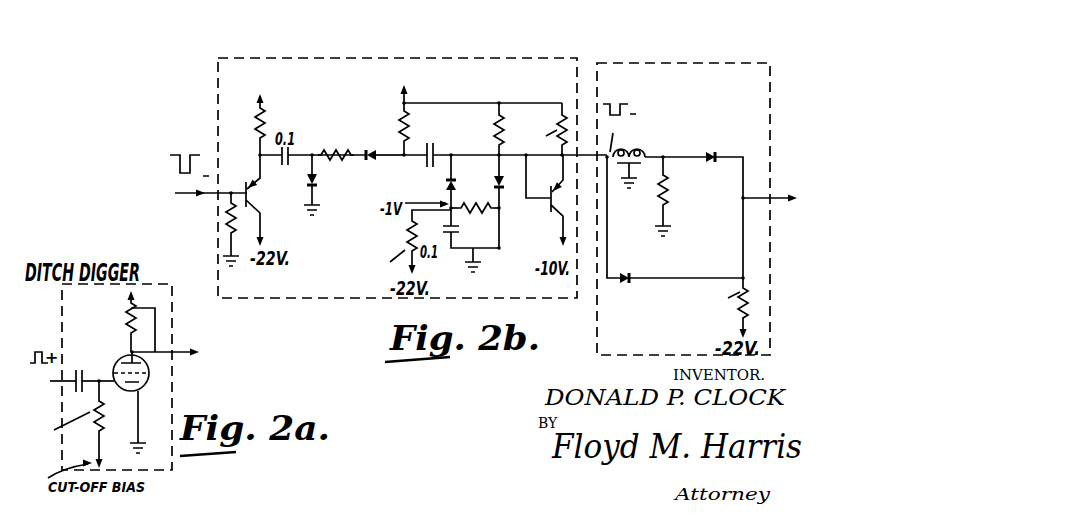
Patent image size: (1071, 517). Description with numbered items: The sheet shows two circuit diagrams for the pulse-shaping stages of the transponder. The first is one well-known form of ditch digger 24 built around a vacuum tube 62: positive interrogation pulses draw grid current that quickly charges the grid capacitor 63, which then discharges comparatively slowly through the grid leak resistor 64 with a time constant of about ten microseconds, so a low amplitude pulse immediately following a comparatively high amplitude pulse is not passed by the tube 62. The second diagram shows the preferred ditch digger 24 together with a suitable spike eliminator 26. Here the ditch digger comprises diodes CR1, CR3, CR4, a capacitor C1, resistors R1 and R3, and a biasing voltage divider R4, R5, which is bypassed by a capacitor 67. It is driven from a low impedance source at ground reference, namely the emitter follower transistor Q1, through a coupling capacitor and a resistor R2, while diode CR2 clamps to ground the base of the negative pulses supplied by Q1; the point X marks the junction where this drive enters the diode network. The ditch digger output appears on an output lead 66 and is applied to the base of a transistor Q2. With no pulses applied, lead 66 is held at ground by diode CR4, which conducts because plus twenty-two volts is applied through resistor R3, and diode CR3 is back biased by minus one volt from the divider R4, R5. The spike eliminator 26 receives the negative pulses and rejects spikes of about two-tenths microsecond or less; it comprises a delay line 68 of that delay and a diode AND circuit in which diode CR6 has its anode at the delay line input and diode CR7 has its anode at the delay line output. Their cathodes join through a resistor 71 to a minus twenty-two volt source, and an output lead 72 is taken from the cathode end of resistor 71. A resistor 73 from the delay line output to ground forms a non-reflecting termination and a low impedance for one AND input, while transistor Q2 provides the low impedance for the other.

In FIG. 2B, the ditch digger 24 is at (411, 50).
In FIG. 2B, the spike eliminator 26 is at (752, 60).
In FIG. 2A, the vacuum tube 62 is at (124, 340).
In FIG. 2A, the grid capacitor 63 is at (72, 392).
In FIG. 2A, the grid leak resistor 64 is at (92, 430).
In FIG. 2B, the output lead 66 is at (523, 160).
In FIG. 2B, the capacitor 67 is at (446, 214).
In FIG. 2B, the delay line 68 is at (614, 168).
In FIG. 2B, the resistor 71 is at (735, 310).
In FIG. 2B, the output lead 72 is at (776, 196).
In FIG. 2B, the resistor 73 is at (675, 200).
In FIG. 2B, the emitter follower transistor Q1 is at (253, 198).
In FIG. 2B, the transistor Q2 is at (558, 185).
In FIG. 2B, the diode CR1 is at (382, 145).
In FIG. 2B, the diode CR2 is at (309, 181).
In FIG. 2B, the diode CR3 is at (445, 183).
In FIG. 2B, the diode CR4 is at (497, 178).
In FIG. 2B, the diode CR6 is at (675, 235).
In FIG. 2B, the diode CR7 is at (694, 163).
In FIG. 2B, the resistor R1 is at (400, 118).
In FIG. 2B, the resistor R2 is at (350, 160).
In FIG. 2B, the resistor R3 is at (497, 112).
In FIG. 2B, the resistor R4 is at (472, 225).
In FIG. 2B, the resistor R5 is at (408, 235).
In FIG. 2B, the capacitor C1 is at (433, 154).
In FIG. 2B, the point X is at (380, 162).